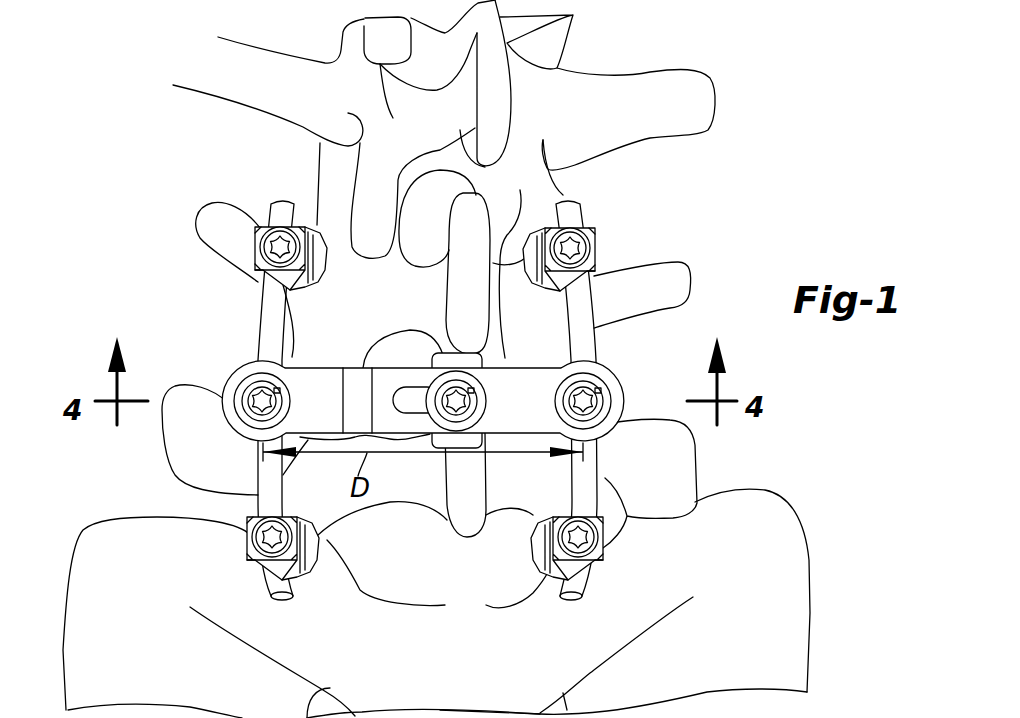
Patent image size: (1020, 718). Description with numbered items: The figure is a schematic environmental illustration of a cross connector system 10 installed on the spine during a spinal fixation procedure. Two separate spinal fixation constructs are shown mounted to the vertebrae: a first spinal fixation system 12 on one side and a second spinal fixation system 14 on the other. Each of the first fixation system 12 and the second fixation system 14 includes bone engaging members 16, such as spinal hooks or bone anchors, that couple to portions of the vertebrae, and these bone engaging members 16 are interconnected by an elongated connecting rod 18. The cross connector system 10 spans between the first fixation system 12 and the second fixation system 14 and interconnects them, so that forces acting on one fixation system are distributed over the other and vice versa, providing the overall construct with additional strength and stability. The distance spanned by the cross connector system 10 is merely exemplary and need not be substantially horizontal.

The cross connector system 10 is at (547, 300).
The first spinal fixation system 12 is at (243, 333).
The second spinal fixation system 14 is at (609, 256).
The bone engaging member 16 is at (319, 212).
The connecting rod 18 is at (282, 600).